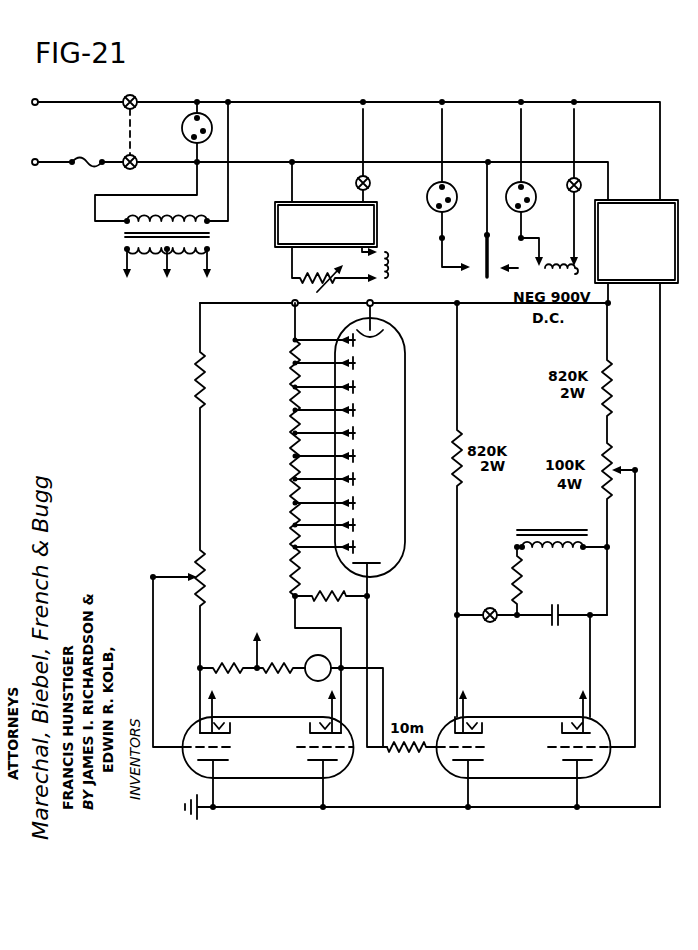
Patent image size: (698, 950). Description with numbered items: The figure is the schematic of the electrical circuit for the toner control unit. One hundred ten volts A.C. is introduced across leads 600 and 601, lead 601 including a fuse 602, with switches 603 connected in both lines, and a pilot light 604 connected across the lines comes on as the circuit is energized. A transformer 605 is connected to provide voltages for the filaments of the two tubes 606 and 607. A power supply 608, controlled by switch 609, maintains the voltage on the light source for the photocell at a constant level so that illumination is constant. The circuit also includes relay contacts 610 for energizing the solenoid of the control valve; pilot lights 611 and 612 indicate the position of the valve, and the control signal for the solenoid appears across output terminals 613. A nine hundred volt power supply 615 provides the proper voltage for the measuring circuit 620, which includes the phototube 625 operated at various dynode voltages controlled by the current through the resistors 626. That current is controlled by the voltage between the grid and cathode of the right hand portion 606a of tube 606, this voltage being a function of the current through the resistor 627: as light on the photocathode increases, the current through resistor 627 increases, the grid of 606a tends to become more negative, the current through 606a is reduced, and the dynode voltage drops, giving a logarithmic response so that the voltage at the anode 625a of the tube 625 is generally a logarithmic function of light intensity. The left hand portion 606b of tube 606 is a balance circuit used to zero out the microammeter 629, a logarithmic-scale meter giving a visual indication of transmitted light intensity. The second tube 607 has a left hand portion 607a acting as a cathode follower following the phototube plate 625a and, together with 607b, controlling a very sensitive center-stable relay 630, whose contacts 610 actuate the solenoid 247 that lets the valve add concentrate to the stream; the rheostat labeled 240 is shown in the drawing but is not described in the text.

The lead 600 is at (76, 101).
The lead 601 is at (52, 159).
The fuse 602 is at (76, 175).
The switches 603 is at (138, 86).
The pilot light 604 is at (206, 114).
The transformer 605 is at (115, 239).
The tube 606 is at (272, 745).
The right hand portion of tube 606 606a is at (348, 762).
The left hand portion of tube 606 606b is at (190, 763).
The second tube 607 is at (521, 745).
The left hand portion of tube 607 607a is at (448, 768).
The right hand portion of tube 607 607b is at (593, 764).
The power supply 608 is at (320, 202).
The switch 609 is at (371, 182).
The relay contacts 610 is at (452, 276).
The pilot light 611 is at (455, 196).
The pilot light 612 is at (528, 194).
The output terminals 613 is at (568, 276).
The 900 volt power supply 615 is at (636, 503).
The measuring circuit 620 is at (193, 504).
The phototube 625 is at (405, 495).
The anode of phototube 625 625a is at (377, 567).
The resistors 626 is at (286, 420).
The resistor 627 is at (318, 602).
The microammeter 629 is at (318, 685).
The center-stable relay 630 is at (554, 528).
The rheostat 240 is at (391, 262).
The solenoid 247 is at (556, 254).